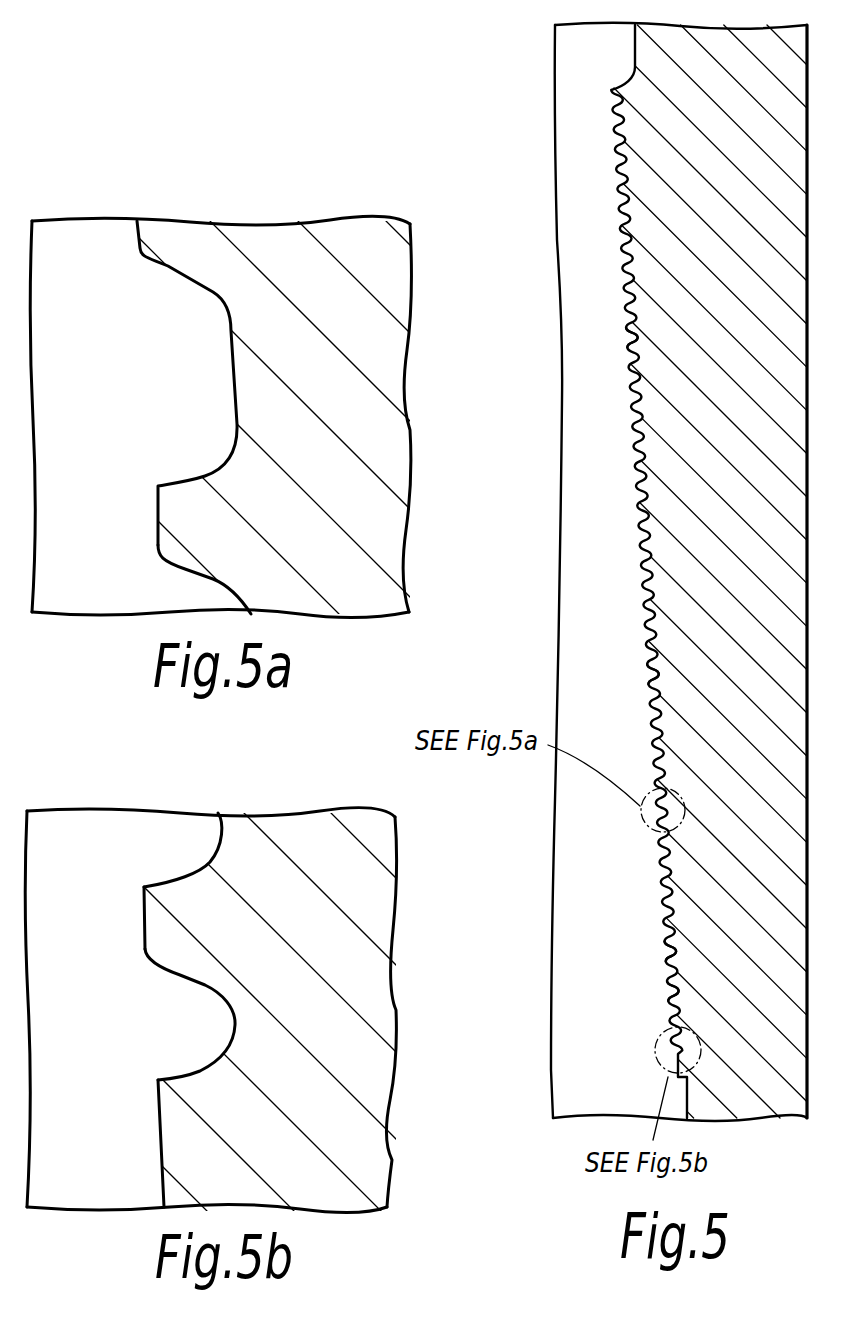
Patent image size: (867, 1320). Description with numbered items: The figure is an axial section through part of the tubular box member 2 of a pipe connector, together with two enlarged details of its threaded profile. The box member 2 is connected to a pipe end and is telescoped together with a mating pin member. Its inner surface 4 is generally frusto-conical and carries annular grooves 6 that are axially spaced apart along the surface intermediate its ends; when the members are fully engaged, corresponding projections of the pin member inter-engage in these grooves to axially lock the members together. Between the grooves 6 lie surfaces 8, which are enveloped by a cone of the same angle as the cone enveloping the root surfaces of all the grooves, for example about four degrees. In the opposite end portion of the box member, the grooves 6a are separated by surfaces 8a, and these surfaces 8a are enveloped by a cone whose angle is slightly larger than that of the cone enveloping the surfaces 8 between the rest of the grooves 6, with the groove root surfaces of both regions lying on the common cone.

In FIG. 5, the tubular box member 2 is at (715, 560).
In FIG. 5, the inner surface of the box member 4 is at (628, 502).
In FIG. 5, the grooves 6 is at (653, 665).
In FIG. 5, the surfaces between the grooves 8 is at (628, 332).
In FIG. 5, the grooves in the end portion of the box member 6a is at (668, 988).
In FIG. 5A, the grooves in the end portion of the box member 6a is at (207, 591).
In FIG. 5B, the grooves in the end portion of the box member 6a is at (189, 836).
In FIG. 5, the surfaces between the grooves in the end portion 8a is at (667, 938).
In FIG. 5B, the surfaces between the grooves in the end portion 8a is at (142, 929).